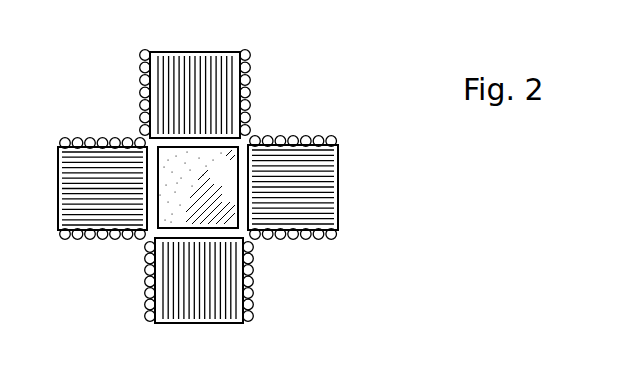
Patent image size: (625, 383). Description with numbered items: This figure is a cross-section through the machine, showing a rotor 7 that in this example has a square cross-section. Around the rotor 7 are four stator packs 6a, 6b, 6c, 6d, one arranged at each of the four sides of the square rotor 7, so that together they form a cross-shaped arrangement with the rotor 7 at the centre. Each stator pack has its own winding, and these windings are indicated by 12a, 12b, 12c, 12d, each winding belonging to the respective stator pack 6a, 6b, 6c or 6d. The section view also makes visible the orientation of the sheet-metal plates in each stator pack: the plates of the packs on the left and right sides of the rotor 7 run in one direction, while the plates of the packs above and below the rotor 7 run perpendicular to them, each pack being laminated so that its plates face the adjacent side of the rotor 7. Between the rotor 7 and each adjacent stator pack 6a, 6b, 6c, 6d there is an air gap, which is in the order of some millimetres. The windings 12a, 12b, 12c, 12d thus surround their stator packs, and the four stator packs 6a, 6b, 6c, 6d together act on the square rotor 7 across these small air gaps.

The rotor 7 is at (170, 167).
The stator pack 6a is at (62, 162).
The stator pack 6b is at (212, 308).
The stator pack 6c is at (339, 180).
The stator pack 6d is at (218, 58).
The winding 12a is at (103, 239).
The winding 12b is at (253, 303).
The winding 12c is at (317, 236).
The winding 12d is at (249, 92).